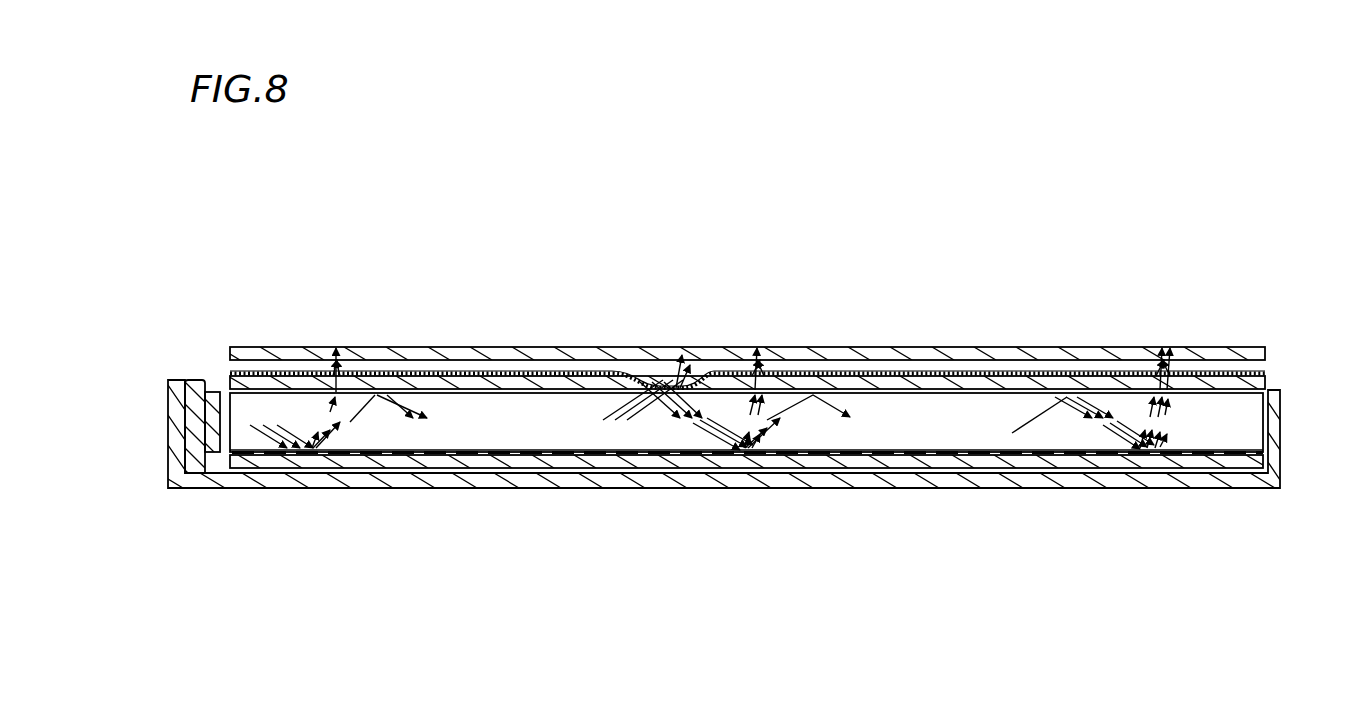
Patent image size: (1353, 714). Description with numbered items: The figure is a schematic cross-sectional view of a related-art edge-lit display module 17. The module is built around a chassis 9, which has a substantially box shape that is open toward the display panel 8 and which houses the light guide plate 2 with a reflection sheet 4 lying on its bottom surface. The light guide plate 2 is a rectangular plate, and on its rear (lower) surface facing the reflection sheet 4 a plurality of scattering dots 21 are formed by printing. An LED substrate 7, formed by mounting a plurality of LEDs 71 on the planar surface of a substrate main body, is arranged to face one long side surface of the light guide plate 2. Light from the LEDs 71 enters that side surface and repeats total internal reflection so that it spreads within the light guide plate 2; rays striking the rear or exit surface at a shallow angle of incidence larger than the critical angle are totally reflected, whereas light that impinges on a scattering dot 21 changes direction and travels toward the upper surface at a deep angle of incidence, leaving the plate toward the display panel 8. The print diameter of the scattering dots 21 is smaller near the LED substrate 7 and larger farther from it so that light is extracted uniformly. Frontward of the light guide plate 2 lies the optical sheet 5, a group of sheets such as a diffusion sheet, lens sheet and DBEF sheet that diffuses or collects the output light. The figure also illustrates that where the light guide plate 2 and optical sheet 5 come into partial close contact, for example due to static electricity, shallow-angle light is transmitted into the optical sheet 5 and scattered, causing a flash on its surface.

The display module 17 is at (1192, 127).
The display panel 8 is at (975, 352).
The optical sheet 5 is at (1056, 383).
The light guide plate 2 is at (1253, 430).
The scattering dots 21 is at (1027, 455).
The reflection sheet 4 is at (1212, 462).
The chassis 9 is at (1142, 480).
The LED substrate 7 is at (192, 372).
The LEDs 71 is at (207, 391).